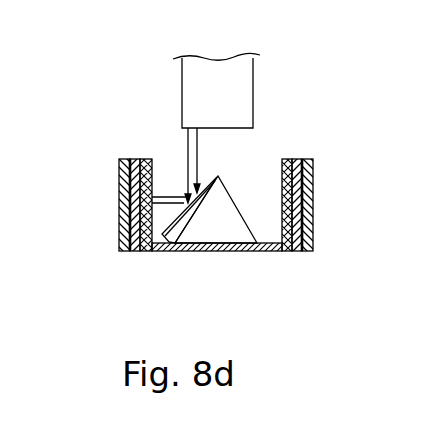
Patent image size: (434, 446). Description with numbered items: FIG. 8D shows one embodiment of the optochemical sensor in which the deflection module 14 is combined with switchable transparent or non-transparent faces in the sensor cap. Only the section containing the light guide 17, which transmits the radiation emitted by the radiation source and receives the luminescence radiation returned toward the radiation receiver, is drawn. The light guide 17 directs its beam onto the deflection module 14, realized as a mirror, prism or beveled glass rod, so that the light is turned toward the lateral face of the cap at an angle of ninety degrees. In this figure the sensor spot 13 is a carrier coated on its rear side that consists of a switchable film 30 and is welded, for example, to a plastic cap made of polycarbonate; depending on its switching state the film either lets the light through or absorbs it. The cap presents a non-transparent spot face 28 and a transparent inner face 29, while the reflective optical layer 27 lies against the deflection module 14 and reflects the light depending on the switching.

The sensor membrane 13 is at (303, 178).
The deflection module 14 is at (218, 226).
The light guide 17 is at (230, 90).
The reflective optical layer 27 is at (166, 233).
The non-transparent spot face 28 is at (303, 201).
The transparent inner face 29 is at (300, 226).
The switchable film 30 is at (214, 205).